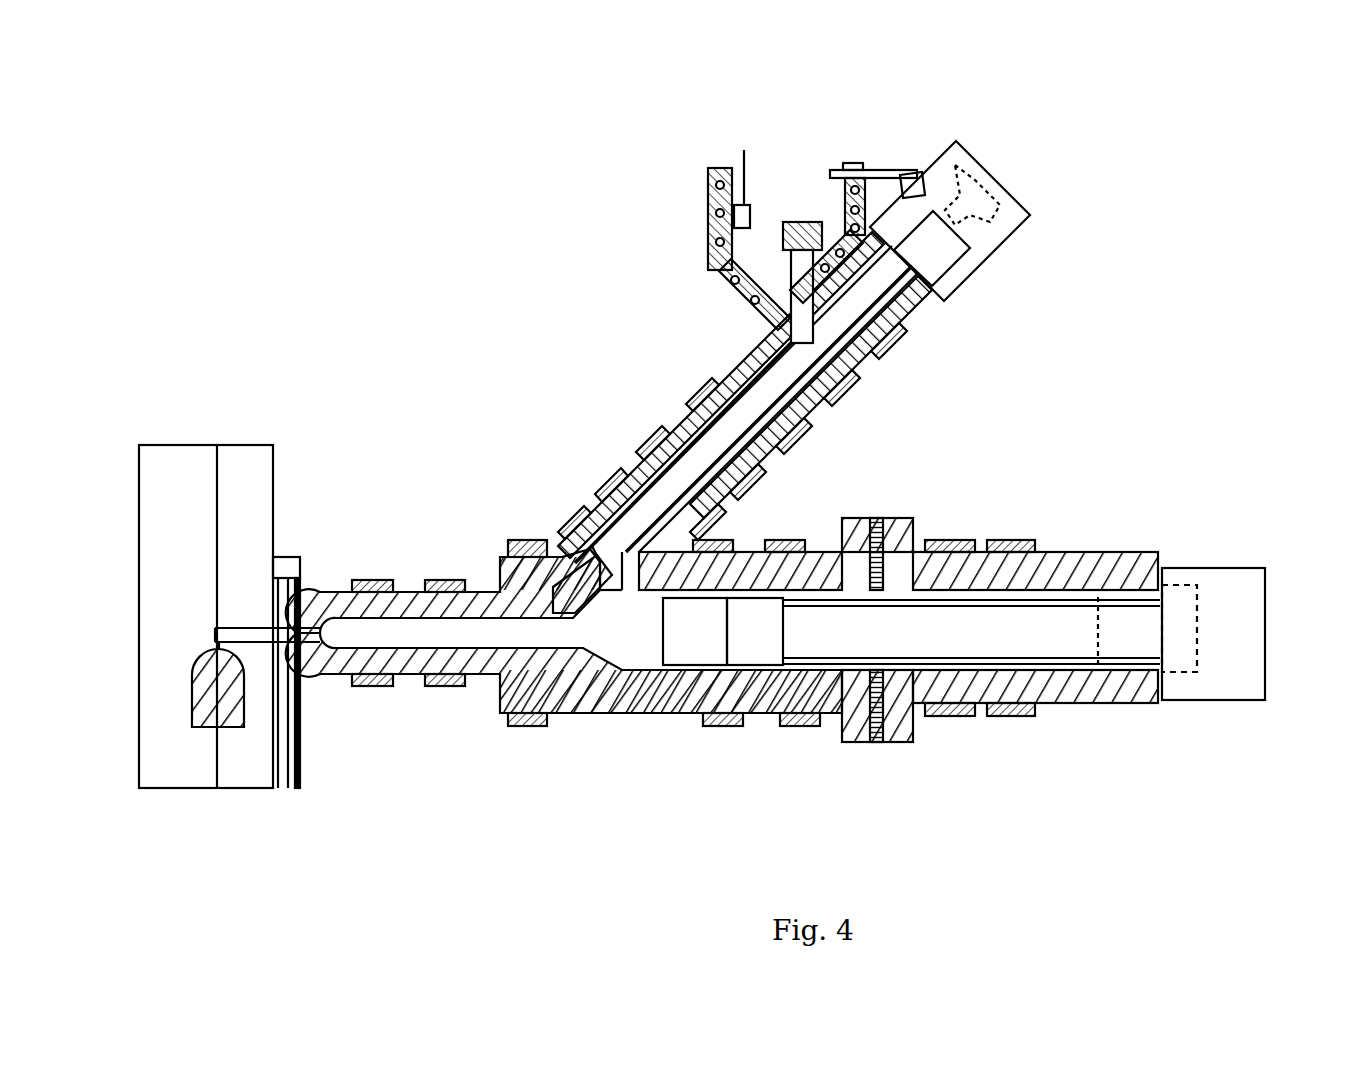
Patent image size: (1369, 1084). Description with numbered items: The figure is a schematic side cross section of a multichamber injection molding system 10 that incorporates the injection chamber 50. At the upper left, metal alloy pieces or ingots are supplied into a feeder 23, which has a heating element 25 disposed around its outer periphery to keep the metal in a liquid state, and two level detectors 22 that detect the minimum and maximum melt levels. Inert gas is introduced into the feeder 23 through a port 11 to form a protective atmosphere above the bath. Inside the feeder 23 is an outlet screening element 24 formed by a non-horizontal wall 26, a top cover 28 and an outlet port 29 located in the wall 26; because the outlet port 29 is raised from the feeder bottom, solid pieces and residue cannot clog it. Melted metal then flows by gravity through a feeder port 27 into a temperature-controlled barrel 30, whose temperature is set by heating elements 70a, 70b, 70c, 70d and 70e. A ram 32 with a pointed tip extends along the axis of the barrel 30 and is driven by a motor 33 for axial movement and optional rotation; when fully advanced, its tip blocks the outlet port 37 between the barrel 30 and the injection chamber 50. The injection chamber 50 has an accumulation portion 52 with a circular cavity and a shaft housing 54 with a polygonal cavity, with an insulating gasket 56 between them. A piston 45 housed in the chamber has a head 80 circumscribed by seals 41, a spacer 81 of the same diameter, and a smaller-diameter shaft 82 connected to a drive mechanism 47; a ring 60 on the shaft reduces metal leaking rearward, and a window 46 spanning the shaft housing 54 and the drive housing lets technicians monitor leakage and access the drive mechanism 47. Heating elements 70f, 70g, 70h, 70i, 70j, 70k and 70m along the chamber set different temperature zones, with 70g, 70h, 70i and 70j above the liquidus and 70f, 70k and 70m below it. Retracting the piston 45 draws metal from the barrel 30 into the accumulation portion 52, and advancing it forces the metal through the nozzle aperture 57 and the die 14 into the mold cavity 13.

The multichamber injection molding system 10 is at (480, 178).
The port 11 is at (917, 172).
The mold cavity 13 is at (205, 715).
The die 14 is at (188, 778).
The level detectors 22 is at (738, 180).
The feeder 23 is at (707, 180).
The outlet screening element 24 is at (815, 202).
The heating element 25 is at (707, 216).
The non-horizontal wall 26 is at (740, 280).
The feeder port 27 is at (797, 324).
The top cover 28 is at (798, 220).
The outlet port 29 is at (776, 258).
The temperature-controlled barrel 30 is at (924, 340).
The ram 32 is at (632, 458).
The motor 33 is at (1000, 250).
The outlet port 37 is at (565, 578).
The seals 41 is at (698, 667).
The piston 45 is at (1148, 650).
The window 46 is at (1186, 585).
The drive mechanism 47 is at (1268, 612).
The injection chamber 50 is at (304, 655).
The accumulation portion 52 is at (630, 713).
The shaft housing 54 is at (1055, 705).
The insulating gasket 56 is at (877, 745).
The nozzle aperture 57 is at (306, 618).
The ring 60 is at (905, 688).
The heating element 70a is at (903, 352).
The heating element 70b is at (858, 395).
The heating element 70c is at (812, 438).
The heating element 70d is at (764, 482).
The heating element 70e is at (718, 520).
The heating element 70f is at (826, 726).
The heating element 70g is at (735, 726).
The heating element 70h is at (520, 726).
The heating element 70i is at (438, 688).
The heating element 70j is at (358, 580).
The heating element 70k is at (955, 531).
The heating element 70m is at (1015, 531).
The head 80 is at (702, 648).
The spacer 81 is at (768, 648).
The shaft 82 is at (997, 648).